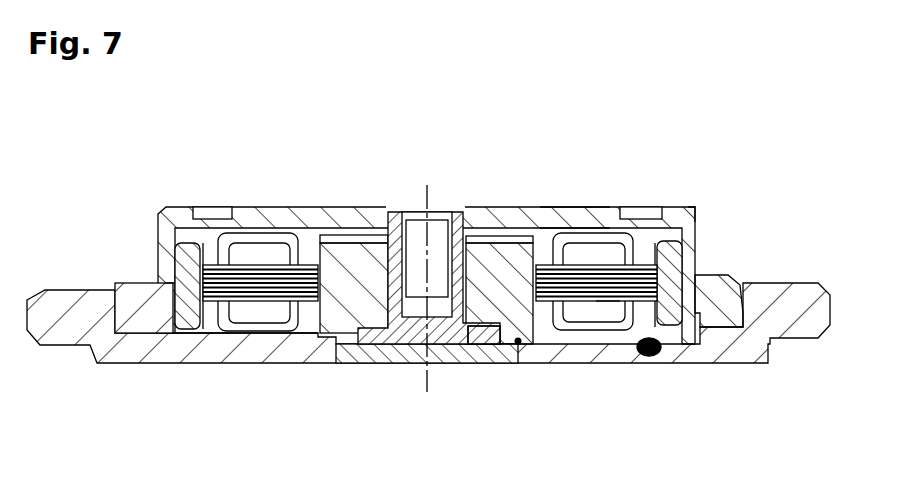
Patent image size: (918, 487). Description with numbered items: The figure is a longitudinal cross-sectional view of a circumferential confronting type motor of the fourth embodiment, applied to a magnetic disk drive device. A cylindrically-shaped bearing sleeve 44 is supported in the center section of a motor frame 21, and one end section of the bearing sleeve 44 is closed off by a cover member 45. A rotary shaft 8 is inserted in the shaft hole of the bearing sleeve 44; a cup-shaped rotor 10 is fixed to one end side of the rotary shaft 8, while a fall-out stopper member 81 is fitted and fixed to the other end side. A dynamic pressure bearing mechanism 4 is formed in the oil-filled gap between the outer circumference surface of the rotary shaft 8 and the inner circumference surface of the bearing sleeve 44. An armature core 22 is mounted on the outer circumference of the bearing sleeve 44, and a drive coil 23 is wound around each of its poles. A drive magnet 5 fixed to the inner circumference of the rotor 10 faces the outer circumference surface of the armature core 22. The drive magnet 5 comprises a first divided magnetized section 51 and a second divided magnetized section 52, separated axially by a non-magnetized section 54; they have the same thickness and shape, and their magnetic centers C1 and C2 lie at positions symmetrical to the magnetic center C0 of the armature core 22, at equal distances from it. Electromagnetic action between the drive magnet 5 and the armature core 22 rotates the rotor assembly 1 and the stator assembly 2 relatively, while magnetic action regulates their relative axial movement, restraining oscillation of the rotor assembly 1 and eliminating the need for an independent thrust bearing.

The rotor assembly 1 is at (668, 200).
The stator assembly 2 is at (750, 366).
The dynamic pressure bearing mechanism 4 is at (326, 236).
The drive magnet 5 is at (354, 272).
The rotary shaft 8 is at (394, 230).
The rotor 10 is at (572, 214).
The motor frame 21 is at (277, 340).
The armature core 22 is at (213, 250).
The drive coil 23 is at (262, 250).
The bearing sleeve 44 is at (503, 252).
The cover member 45 is at (363, 348).
The first divided magnetized section 51 is at (187, 262).
The second divided magnetized section 52 is at (135, 312).
The non-magnetized section 54 is at (163, 282).
The fall-out stopper member 81 is at (480, 347).
The magnetic center of the armature core C0 is at (608, 301).
The magnetic center of the first divided magnetized section C1 is at (688, 220).
The magnetic center of the second divided magnetized section C2 is at (649, 352).